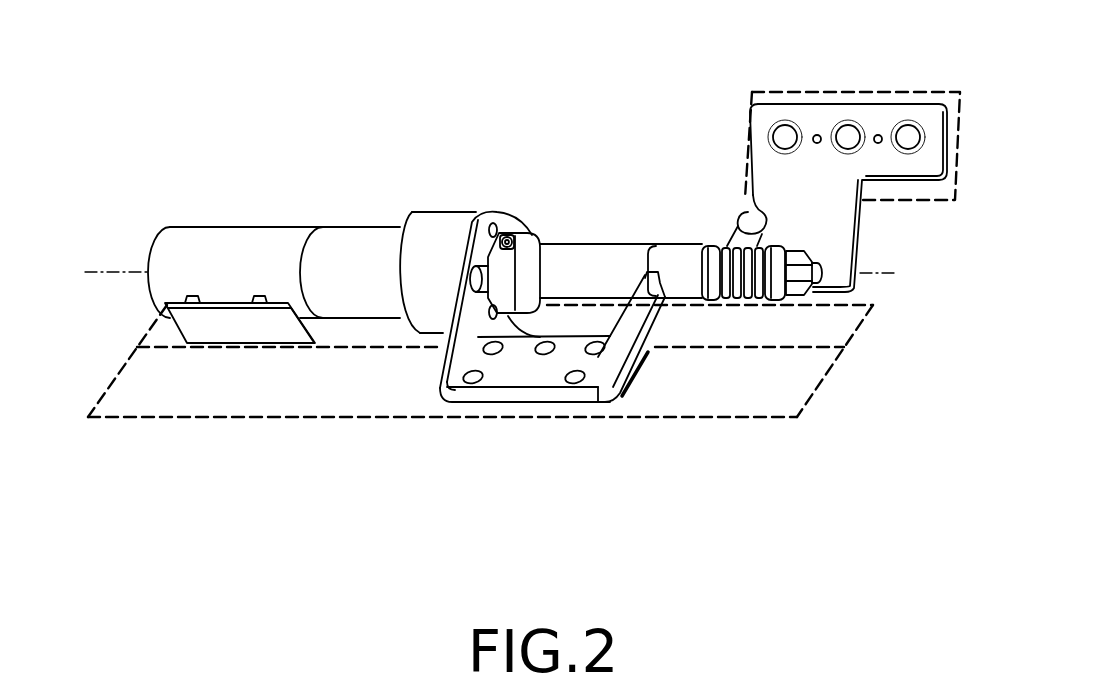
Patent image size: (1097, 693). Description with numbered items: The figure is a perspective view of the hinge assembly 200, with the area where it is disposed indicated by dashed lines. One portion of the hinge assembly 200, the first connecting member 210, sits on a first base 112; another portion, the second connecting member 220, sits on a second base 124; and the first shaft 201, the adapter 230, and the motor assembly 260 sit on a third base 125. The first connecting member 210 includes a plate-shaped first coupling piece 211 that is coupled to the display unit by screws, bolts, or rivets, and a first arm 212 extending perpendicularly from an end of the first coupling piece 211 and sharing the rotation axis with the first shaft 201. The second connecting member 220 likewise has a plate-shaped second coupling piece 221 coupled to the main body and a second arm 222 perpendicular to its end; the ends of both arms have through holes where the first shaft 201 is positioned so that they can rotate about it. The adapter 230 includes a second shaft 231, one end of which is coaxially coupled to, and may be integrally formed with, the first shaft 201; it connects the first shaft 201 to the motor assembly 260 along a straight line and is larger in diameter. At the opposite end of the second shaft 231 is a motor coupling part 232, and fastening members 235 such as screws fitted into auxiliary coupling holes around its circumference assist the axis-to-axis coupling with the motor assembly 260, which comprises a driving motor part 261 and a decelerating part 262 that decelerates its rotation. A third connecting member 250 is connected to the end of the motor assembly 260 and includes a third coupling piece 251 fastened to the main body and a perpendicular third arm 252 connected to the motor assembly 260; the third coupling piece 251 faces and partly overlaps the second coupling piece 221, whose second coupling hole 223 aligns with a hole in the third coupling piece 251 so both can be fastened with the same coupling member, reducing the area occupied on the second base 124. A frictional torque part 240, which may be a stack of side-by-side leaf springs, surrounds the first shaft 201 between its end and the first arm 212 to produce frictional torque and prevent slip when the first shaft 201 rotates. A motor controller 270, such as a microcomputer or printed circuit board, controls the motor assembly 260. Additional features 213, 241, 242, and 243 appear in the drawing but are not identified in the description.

The hinge assembly 200 is at (445, 29).
The first base 112 is at (953, 92).
The second base 124 is at (838, 360).
The third base 125 is at (853, 338).
The first shaft 201 is at (820, 275).
The first connecting member 210 is at (686, 122).
The first coupling piece 211 is at (787, 170).
The first arm 212 is at (742, 227).
The fastening holes 213 is at (783, 128).
The second connecting member 220 is at (663, 496).
The second coupling piece 221 is at (597, 380).
The second arm 222 is at (635, 348).
The second coupling hole 223 is at (565, 383).
The adapter 230 is at (620, 228).
The second shaft 231 is at (587, 252).
The motor coupling part 232 is at (532, 248).
The fastening members 235 is at (505, 232).
The frictional torque part 240 is at (703, 468).
The coil spring 241 is at (733, 292).
The washer 242 is at (725, 292).
The end nut 243 is at (793, 292).
The third connecting member 250 is at (330, 458).
The third coupling piece 251 is at (465, 405).
The third arm 252 is at (443, 352).
The motor assembly 260 is at (367, 138).
The driving motor part 261 is at (235, 250).
The decelerating part 262 is at (353, 250).
The motor controller 270 is at (235, 330).